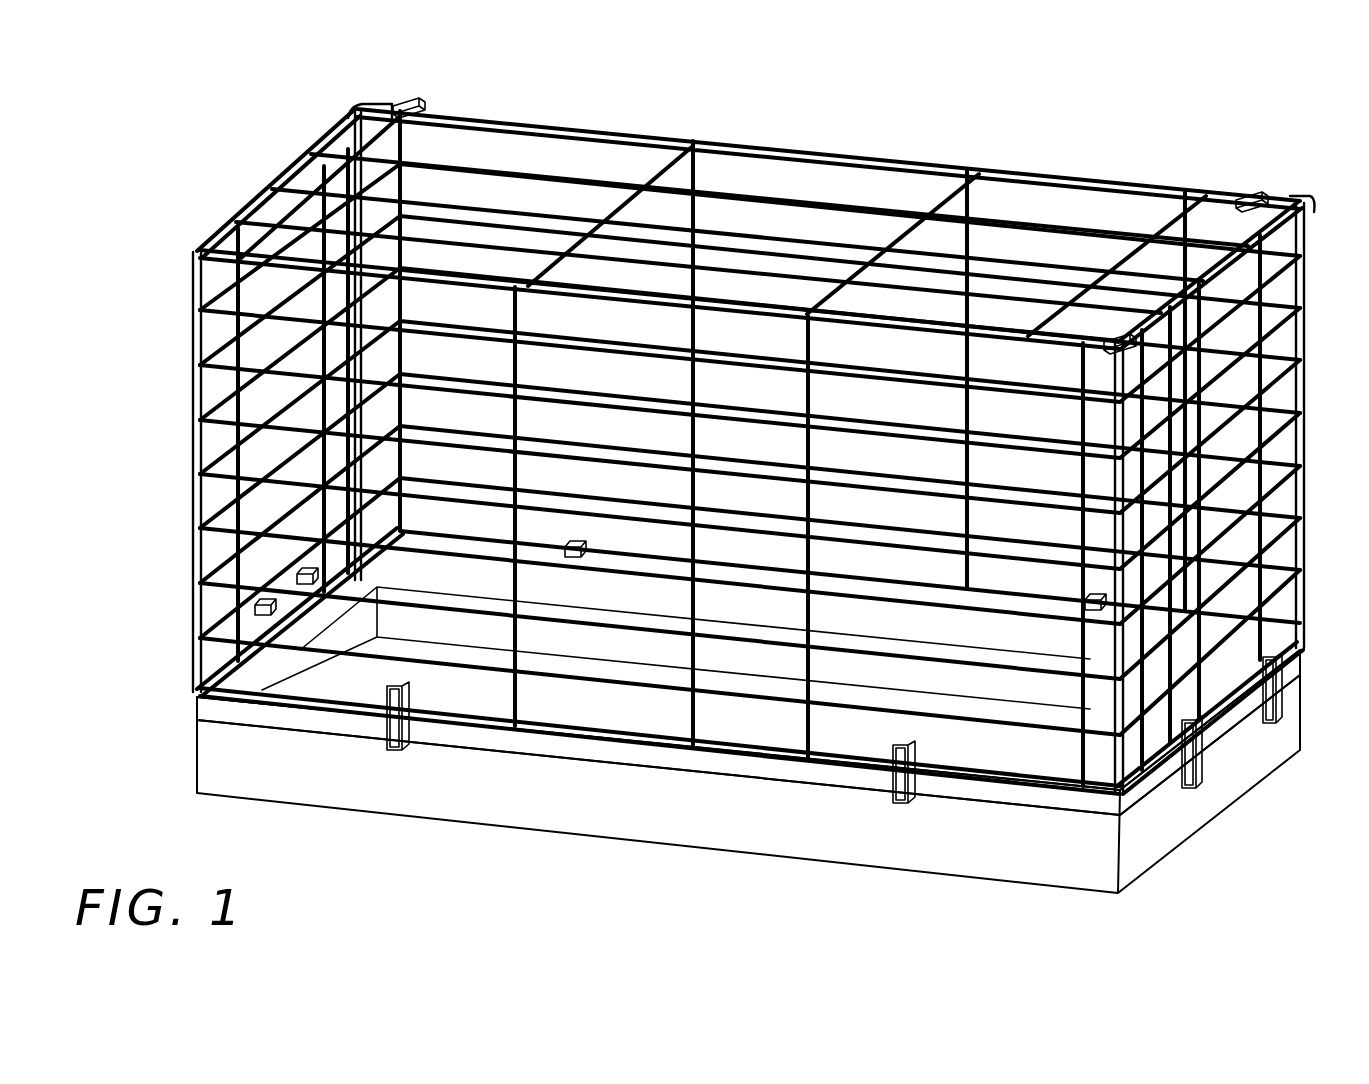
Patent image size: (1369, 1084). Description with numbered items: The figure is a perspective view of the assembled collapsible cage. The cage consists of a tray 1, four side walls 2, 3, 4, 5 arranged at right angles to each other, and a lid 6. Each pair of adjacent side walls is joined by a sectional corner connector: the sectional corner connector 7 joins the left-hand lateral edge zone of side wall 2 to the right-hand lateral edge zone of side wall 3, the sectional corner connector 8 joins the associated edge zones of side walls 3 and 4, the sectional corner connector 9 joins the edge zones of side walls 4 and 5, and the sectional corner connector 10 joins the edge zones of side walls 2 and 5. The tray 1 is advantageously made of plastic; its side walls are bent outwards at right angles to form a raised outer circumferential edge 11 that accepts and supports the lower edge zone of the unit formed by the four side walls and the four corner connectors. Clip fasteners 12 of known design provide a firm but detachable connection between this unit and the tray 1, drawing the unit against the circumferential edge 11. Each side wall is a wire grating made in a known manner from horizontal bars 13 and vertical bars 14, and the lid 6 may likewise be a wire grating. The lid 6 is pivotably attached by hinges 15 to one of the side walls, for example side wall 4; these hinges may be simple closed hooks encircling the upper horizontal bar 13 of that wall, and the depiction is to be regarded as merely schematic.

The tray 1 is at (1237, 765).
The side wall 2 is at (733, 637).
The side wall 3 is at (305, 245).
The side wall 4 is at (1045, 270).
The side wall 5 is at (1235, 440).
The lid 6 is at (793, 195).
The sectional corner connector 7 is at (190, 337).
The sectional corner connector 8 is at (372, 130).
The sectional corner connector 9 is at (1300, 205).
The sectional corner connector 10 is at (1130, 770).
The outer circumferential edge 11 is at (570, 755).
The clip fasteners 12 is at (400, 752).
The horizontal bars 13 is at (840, 705).
The vertical bars 14 is at (512, 695).
The hinges 15 is at (420, 110).